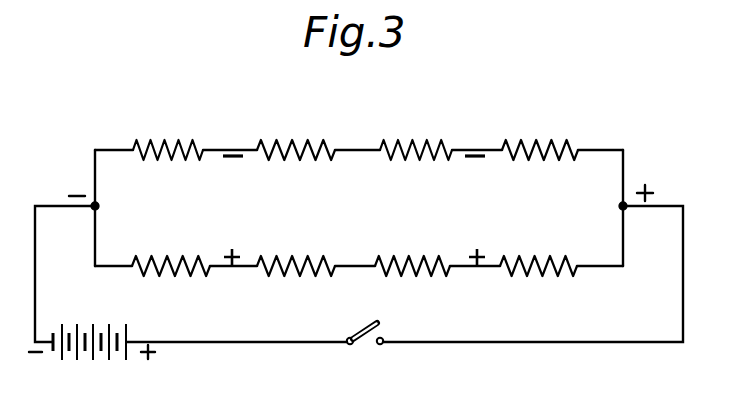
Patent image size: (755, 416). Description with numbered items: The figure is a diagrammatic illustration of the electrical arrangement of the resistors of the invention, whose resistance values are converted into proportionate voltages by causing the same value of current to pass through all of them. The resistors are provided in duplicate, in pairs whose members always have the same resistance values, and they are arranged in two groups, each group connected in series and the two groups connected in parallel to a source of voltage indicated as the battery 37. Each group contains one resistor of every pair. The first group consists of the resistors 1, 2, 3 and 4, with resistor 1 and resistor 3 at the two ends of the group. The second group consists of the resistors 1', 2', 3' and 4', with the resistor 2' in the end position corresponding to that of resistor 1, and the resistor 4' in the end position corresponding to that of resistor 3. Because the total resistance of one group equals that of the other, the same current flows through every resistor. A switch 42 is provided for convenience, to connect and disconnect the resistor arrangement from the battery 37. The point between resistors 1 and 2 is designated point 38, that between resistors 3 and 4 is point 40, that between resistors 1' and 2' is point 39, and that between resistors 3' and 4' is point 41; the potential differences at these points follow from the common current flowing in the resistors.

The resistor 1 is at (296, 122).
The resistor 2 is at (168, 122).
The resistor 3 is at (540, 122).
The resistor 4 is at (416, 122).
The resistor 1' is at (171, 248).
The resistor 2' is at (296, 248).
The resistor 3' is at (412, 248).
The resistor 4' is at (538, 248).
The point 38 is at (233, 151).
The point 40 is at (477, 151).
The point 39 is at (232, 268).
The point 41 is at (477, 268).
The battery 37 is at (86, 361).
The switch 42 is at (358, 341).